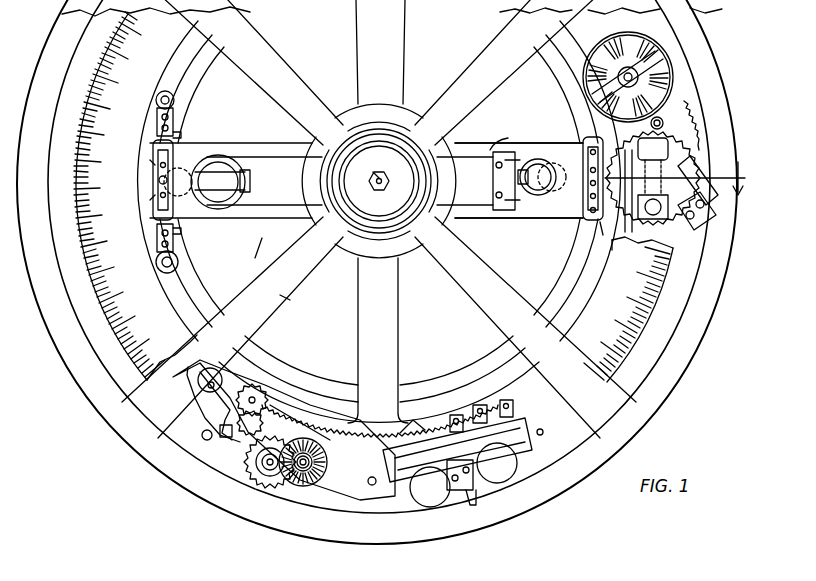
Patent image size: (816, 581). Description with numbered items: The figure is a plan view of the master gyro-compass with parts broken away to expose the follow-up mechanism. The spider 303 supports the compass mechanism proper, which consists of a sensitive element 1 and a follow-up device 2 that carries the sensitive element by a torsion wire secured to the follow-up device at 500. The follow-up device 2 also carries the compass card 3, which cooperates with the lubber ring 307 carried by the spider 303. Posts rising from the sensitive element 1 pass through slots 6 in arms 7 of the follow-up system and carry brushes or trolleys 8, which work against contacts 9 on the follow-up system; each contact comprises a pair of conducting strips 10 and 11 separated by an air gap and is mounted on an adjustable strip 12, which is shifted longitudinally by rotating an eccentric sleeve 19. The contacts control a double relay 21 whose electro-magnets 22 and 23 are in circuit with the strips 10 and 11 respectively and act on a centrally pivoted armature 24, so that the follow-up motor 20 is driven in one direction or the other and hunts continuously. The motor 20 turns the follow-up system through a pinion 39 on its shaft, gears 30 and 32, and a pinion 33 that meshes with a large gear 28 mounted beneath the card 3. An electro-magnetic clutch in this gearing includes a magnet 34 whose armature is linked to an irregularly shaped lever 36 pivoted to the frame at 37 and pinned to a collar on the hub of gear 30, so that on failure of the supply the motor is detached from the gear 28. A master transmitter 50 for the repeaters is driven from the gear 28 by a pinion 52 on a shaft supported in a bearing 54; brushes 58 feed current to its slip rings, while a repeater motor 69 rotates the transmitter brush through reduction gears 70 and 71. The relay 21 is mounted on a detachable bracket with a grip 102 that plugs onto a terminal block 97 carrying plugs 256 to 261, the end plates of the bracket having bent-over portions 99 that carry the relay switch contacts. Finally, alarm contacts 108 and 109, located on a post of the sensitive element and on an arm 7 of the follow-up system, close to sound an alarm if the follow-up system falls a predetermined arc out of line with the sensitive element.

The sensitive element 1 is at (384, 189).
The follow-up device 2 is at (377, 272).
The compass card 3 is at (373, 197).
The slots or openings 6 is at (220, 156).
The arms 7 is at (519, 180).
The brushes or trolleys 8 is at (370, 187).
The contacts 9 is at (172, 170).
The conducting strip 10 is at (156, 190).
The conducting strip 11 is at (156, 168).
The adjustable strip 12 is at (174, 104).
The sleeve 19 is at (178, 262).
The motor 20 is at (328, 464).
The double relay 21 is at (458, 498).
The electro-magnet 22 is at (430, 502).
The electro-magnet 23 is at (501, 477).
The pivoted armature 24 is at (527, 460).
The large gear 28 is at (372, 437).
The gear 30 is at (257, 480).
The gear 32 is at (277, 410).
The pinion 33 is at (255, 399).
The electro-magnet 34 is at (216, 386).
The irregularly shaped lever 36 is at (211, 404).
The lever pivot 37 is at (242, 416).
The pinion 39 is at (303, 470).
The master transmitter 50 is at (685, 155).
The pinion 52 is at (653, 178).
The bearing 54 is at (214, 573).
The brushes 58 is at (716, 196).
The repeater motor 69 is at (606, 50).
The reduction gear 70 is at (669, 124).
The reduction gear 71 is at (706, 168).
The contact or terminal block 97 is at (462, 413).
The bent over end portion 99 is at (459, 465).
The finger hold or grip 102 is at (482, 513).
The alarm contact 108 is at (515, 181).
The alarm contact 109 is at (510, 222).
The plug 256 is at (493, 401).
The plug 261 is at (424, 417).
The spider 303 is at (290, 300).
The lubber ring 307 is at (652, 283).
The torsion wire attachment point 500 is at (374, 170).